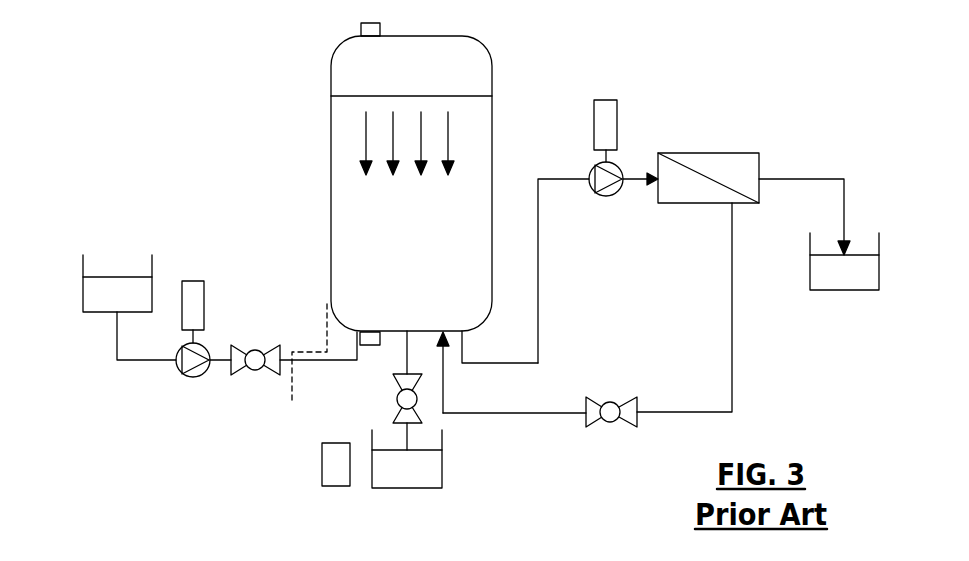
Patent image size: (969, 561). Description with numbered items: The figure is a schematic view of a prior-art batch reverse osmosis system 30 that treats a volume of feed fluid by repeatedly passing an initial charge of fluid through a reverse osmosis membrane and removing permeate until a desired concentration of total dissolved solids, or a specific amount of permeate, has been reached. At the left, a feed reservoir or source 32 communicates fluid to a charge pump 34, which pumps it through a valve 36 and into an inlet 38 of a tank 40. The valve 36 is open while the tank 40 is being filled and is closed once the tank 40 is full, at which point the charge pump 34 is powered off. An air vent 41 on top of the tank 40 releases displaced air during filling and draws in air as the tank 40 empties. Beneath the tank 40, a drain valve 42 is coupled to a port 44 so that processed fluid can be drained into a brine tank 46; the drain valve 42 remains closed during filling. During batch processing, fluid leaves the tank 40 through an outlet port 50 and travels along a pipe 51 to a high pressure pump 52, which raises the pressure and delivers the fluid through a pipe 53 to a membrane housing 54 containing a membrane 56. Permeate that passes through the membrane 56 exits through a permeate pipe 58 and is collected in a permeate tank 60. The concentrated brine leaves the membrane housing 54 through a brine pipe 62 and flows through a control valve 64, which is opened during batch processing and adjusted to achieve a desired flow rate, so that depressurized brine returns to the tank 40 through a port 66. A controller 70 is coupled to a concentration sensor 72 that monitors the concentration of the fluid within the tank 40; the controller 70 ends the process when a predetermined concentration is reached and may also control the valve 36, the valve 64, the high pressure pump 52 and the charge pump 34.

The batch reverse osmosis system 30 is at (168, 99).
The feed reservoir or source 32 is at (83, 295).
The charge pump 34 is at (193, 378).
The valve 36 is at (255, 348).
The inlet 38 is at (357, 356).
The tank 40 is at (331, 193).
The air vent 41 is at (371, 25).
The drain valve 42 is at (412, 402).
The port 44 is at (405, 352).
The brine tank 46 is at (442, 466).
The outlet port 50 is at (466, 347).
The pipe 51 is at (539, 282).
The high pressure pump 52 is at (594, 118).
The pipe 53 is at (636, 177).
The membrane housing 54 is at (745, 153).
The membrane 56 is at (701, 172).
The permeate pipe 58 is at (821, 178).
The permeate tank 60 is at (862, 290).
The brine pipe 62 is at (735, 345).
The valve 64 is at (610, 423).
The port 66 is at (443, 387).
The controller 70 is at (322, 462).
The concentration sensor 72 is at (372, 335).